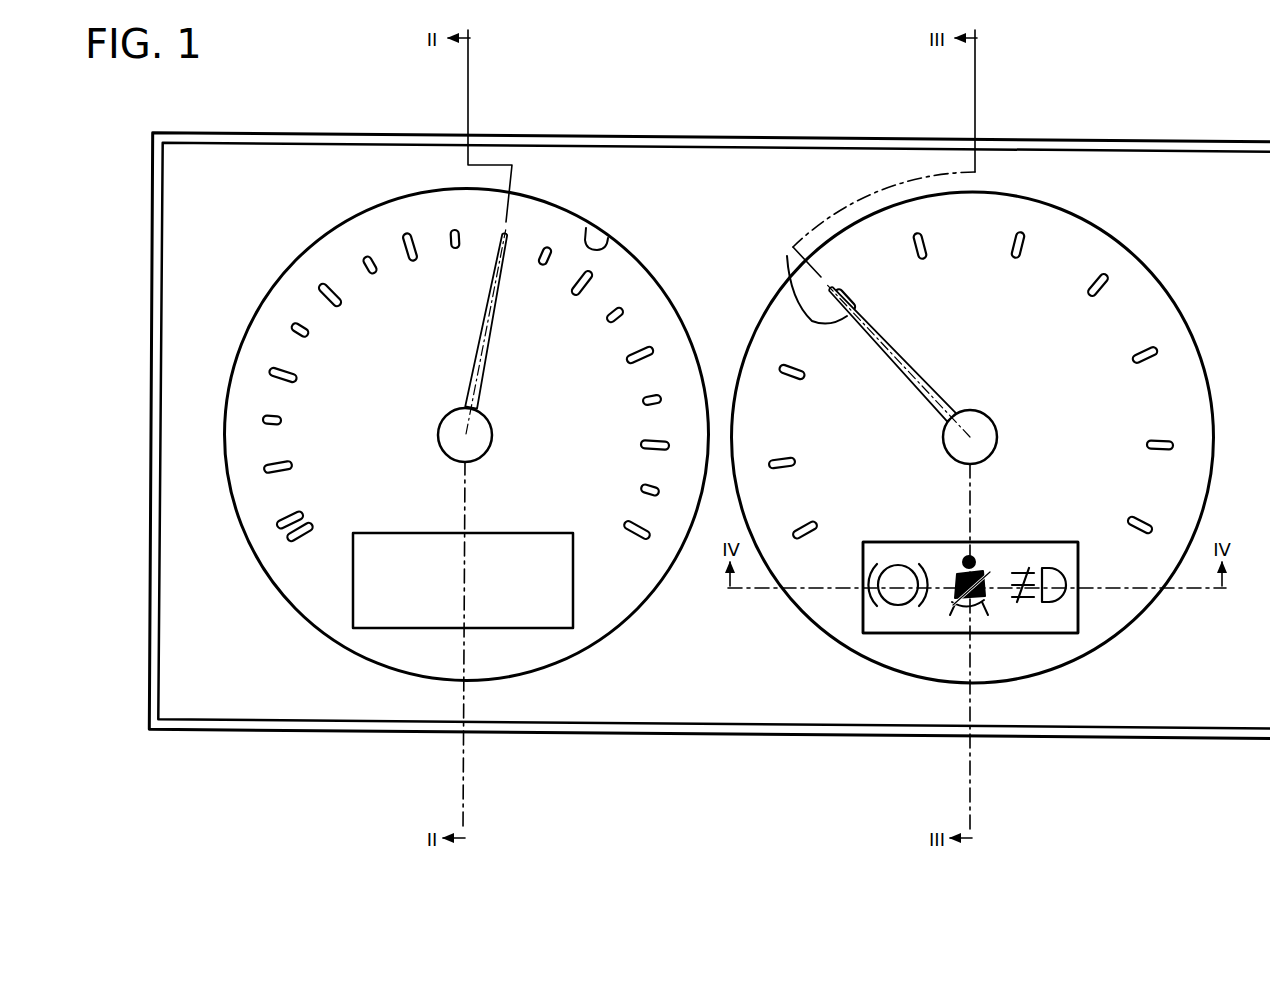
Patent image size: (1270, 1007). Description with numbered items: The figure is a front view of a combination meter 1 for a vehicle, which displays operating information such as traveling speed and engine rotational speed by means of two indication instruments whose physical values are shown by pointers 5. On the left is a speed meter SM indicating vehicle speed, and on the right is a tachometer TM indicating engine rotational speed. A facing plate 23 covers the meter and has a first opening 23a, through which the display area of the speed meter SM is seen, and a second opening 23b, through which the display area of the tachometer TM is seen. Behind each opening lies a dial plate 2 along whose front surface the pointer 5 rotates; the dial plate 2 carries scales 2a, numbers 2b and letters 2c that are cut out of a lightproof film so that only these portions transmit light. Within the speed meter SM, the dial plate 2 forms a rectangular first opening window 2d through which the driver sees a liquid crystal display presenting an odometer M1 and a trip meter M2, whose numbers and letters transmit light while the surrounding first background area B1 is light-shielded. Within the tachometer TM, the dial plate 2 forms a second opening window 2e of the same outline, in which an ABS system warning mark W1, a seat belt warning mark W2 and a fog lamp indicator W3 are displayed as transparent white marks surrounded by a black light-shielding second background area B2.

The combination meter 1 is at (87, 109).
The dial plate 2 is at (692, 378).
The speed meter SM is at (274, 301).
The tachometer TM is at (1084, 242).
The scales 2a is at (327, 288).
The numbers 2b is at (350, 310).
The letters 2c is at (432, 478).
The pointer 5 is at (465, 320).
The facing plate 23 is at (560, 180).
The first opening 23a is at (586, 228).
The second opening 23b is at (750, 358).
The first opening window 2d is at (572, 578).
The first background area B1 is at (438, 608).
The odometer M1 is at (368, 567).
The trip meter M2 is at (375, 608).
The second opening window 2e is at (869, 612).
The second background area B2 is at (1067, 625).
The ABS system warning indication section W1 is at (897, 615).
The seat belt warning indication section W2 is at (963, 618).
The fog lamp indication section W3 is at (1038, 615).